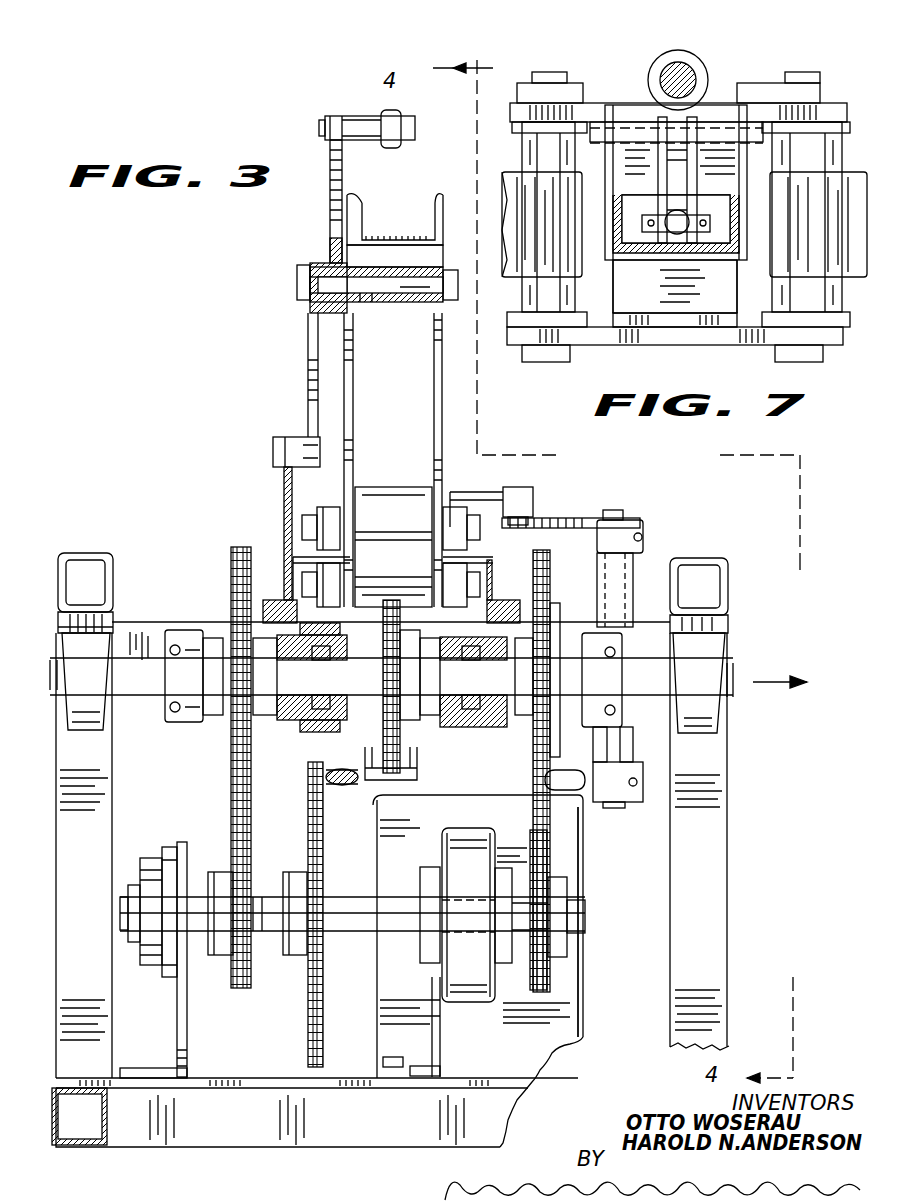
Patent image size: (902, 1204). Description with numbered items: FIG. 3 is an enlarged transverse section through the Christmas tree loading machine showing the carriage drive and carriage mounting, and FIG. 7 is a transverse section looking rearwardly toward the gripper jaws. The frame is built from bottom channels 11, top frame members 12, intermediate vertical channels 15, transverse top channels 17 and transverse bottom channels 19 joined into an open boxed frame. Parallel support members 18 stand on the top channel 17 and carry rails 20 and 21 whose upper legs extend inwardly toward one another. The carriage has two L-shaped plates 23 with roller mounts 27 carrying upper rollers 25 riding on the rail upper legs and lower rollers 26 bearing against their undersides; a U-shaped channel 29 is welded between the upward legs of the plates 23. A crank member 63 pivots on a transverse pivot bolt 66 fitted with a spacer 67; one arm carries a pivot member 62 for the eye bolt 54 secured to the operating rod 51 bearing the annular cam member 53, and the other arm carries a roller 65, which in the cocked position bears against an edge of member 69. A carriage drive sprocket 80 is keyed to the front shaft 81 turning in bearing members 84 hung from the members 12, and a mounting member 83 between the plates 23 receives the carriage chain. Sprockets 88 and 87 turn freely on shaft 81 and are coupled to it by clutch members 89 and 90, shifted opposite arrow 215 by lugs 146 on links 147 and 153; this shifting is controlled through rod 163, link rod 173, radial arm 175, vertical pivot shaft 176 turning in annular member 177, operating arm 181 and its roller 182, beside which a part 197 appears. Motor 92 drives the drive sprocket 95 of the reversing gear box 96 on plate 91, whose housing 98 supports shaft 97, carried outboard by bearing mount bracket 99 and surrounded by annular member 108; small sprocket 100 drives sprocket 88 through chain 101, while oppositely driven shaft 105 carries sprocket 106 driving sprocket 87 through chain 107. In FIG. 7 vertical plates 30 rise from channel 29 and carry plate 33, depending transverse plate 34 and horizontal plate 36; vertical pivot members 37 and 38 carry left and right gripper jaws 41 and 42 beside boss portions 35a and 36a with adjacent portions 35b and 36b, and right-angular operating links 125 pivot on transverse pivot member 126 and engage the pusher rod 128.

In FIG. 3, the bottom channels 11 is at (85, 1148).
In FIG. 3, the top frame members 12 is at (90, 552).
In FIG. 3, the intermediate vertical channels 15 is at (96, 1030).
In FIG. 3, the transverse top channels 17 is at (135, 622).
In FIG. 3, the support members 18 is at (495, 600).
In FIG. 3, the transverse bottom channels 19 is at (205, 1138).
In FIG. 3, the rail 20 is at (500, 545).
In FIG. 3, the rail 21 is at (305, 570).
In FIG. 3, the L-shaped plates 23 is at (434, 398).
In FIG. 3, the roller 25 is at (333, 508).
In FIG. 3, the lower roller 26 is at (293, 575).
In FIG. 3, the roller mount 27 is at (392, 535).
In FIG. 3, the U-shaped channel 29 is at (387, 240).
In FIG. 7, the U-shaped channel 29 is at (645, 258).
In FIG. 7, the vertical plate 30 is at (737, 258).
In FIG. 7, the plate 33 is at (840, 112).
In FIG. 7, the transverse plate 34 is at (698, 300).
In FIG. 7, the boss portion 35a is at (540, 152).
In FIG. 7, the left column cap 35b is at (585, 85).
In FIG. 7, the horizontal plate 36 is at (630, 345).
In FIG. 7, the boss portion 36a is at (830, 152).
In FIG. 7, the right column cap 36b is at (765, 85).
In FIG. 7, the vertical pivot member 37 is at (555, 362).
In FIG. 7, the vertical pivot member 38 is at (800, 362).
In FIG. 7, the gripper jaw 41 is at (502, 203).
In FIG. 7, the gripper jaw 42 is at (855, 265).
In FIG. 7, the operating rod 51 is at (695, 72).
In FIG. 7, the annular cam member 53 is at (690, 50).
In FIG. 3, the eye bolt 54 is at (391, 148).
In FIG. 3, the pivot member 62 is at (345, 116).
In FIG. 3, the crank member 63 is at (308, 352).
In FIG. 3, the roller 65 is at (273, 450).
In FIG. 3, the transverse pivot bolt 66 is at (318, 285).
In FIG. 3, the spacer 67 is at (373, 302).
In FIG. 3, the tie rod 69 is at (284, 485).
In FIG. 3, the carriage drive sprocket 80 is at (400, 720).
In FIG. 3, the front shaft 81 is at (140, 688).
In FIG. 3, the mounting member 83 is at (372, 595).
In FIG. 3, the bearing members 84 is at (92, 720).
In FIG. 3, the sprocket 87 is at (565, 610).
In FIG. 3, the sprocket 88 is at (223, 740).
In FIG. 3, the clutch member 89 is at (290, 720).
In FIG. 3, the clutch member 90 is at (490, 725).
In FIG. 3, the plate 91 is at (395, 1092).
In FIG. 3, the motor 92 is at (578, 1035).
In FIG. 3, the drive sprocket 95 is at (297, 955).
In FIG. 3, the reversing gear box 96 is at (420, 850).
In FIG. 3, the shaft 97 is at (257, 897).
In FIG. 3, the reversing gear box housing 98 is at (470, 1002).
In FIG. 3, the bearing mount bracket 99 is at (187, 1048).
In FIG. 3, the small diameter sprocket 100 is at (220, 955).
In FIG. 3, the chain 101 is at (231, 815).
In FIG. 3, the driven shaft 105 is at (585, 920).
In FIG. 3, the small diameter sprocket 106 is at (567, 887).
In FIG. 3, the chain 107 is at (547, 830).
In FIG. 3, the annular member 108 is at (410, 930).
In FIG. 7, the operating links 125 is at (695, 200).
In FIG. 7, the transverse pivot member 126 is at (603, 125).
In FIG. 7, the pusher rod 128 is at (680, 234).
In FIG. 3, the lugs 146 is at (340, 645).
In FIG. 3, the links 147 is at (303, 730).
In FIG. 3, the links 153 is at (417, 775).
In FIG. 3, the rod 163 is at (343, 786).
In FIG. 3, the link rod 173 is at (570, 790).
In FIG. 3, the radial arm 175 is at (643, 772).
In FIG. 3, the vertical pivot shaft 176 is at (623, 513).
In FIG. 3, the annular member 177 is at (630, 575).
In FIG. 3, the operating arm 181 is at (585, 518).
In FIG. 3, the roller 182 is at (533, 495).
In FIG. 3, the link 197 is at (483, 490).
In FIG. 3, the arrow 215 is at (753, 682).